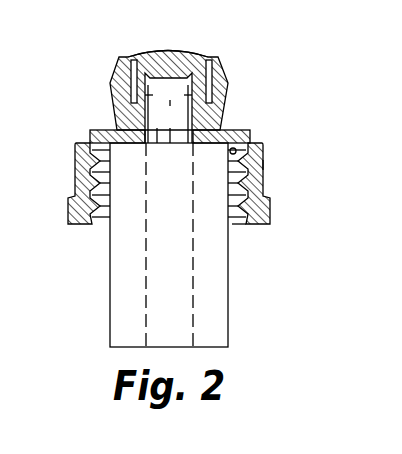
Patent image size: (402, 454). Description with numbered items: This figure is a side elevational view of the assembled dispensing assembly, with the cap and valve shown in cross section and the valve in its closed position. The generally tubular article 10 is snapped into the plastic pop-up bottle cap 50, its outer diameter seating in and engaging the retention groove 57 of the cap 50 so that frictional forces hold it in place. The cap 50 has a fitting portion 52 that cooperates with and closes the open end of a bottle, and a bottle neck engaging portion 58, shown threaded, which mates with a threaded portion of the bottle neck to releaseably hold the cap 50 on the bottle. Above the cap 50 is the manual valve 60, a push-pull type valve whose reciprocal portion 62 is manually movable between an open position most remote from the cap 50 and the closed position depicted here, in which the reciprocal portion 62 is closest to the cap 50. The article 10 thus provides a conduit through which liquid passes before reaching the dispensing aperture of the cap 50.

The article 10 is at (110, 273).
The bottle cap 50 is at (74, 177).
The fitting portion 52 is at (236, 151).
The retention groove 57 is at (248, 162).
The bottle neck engaging portion 58 is at (238, 218).
The manual valve 60 is at (108, 87).
The reciprocal portion 62 is at (215, 55).